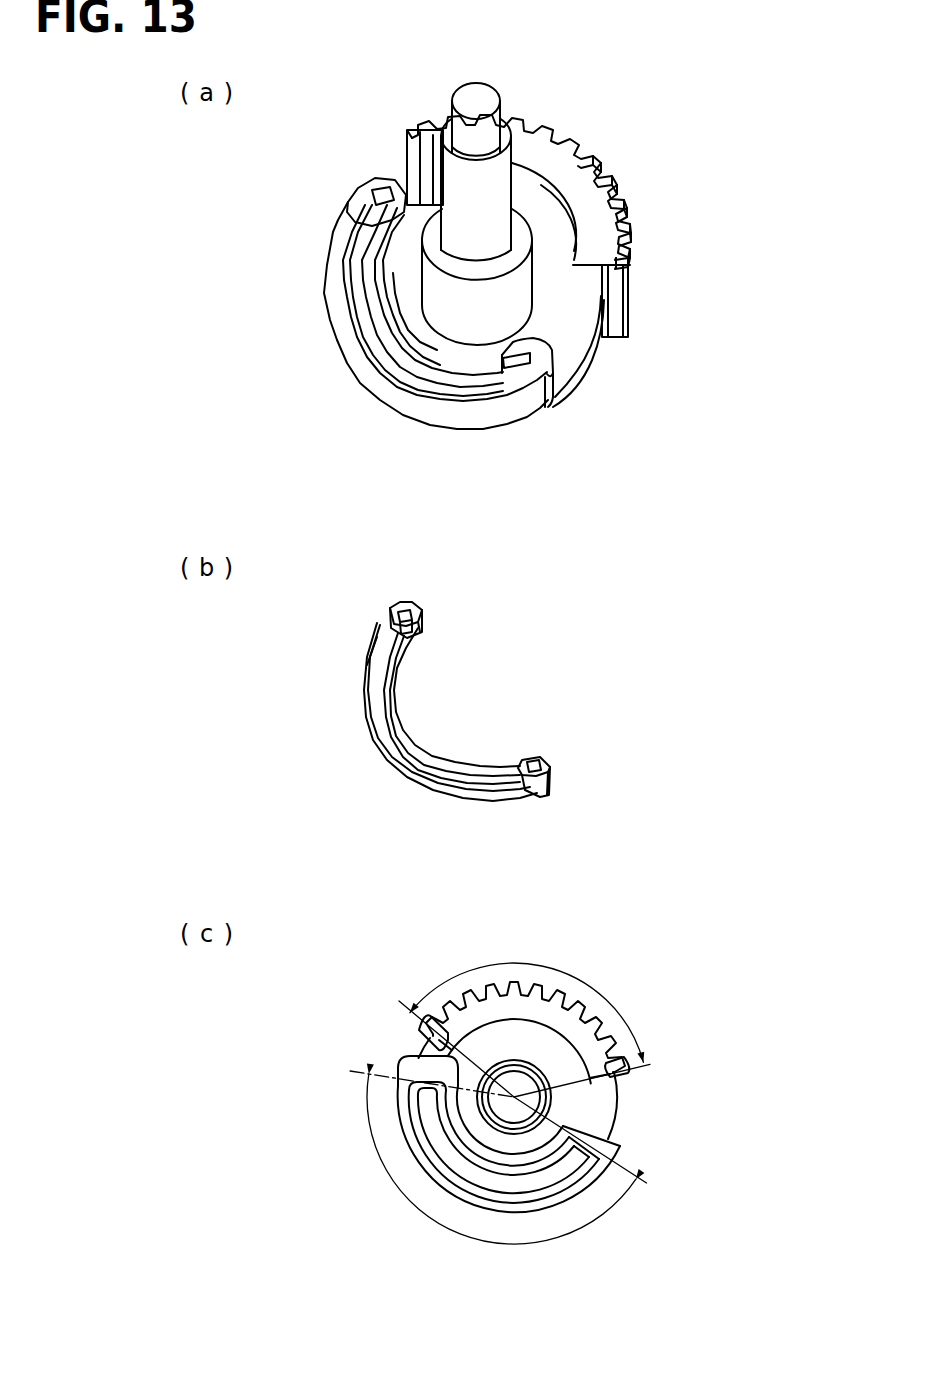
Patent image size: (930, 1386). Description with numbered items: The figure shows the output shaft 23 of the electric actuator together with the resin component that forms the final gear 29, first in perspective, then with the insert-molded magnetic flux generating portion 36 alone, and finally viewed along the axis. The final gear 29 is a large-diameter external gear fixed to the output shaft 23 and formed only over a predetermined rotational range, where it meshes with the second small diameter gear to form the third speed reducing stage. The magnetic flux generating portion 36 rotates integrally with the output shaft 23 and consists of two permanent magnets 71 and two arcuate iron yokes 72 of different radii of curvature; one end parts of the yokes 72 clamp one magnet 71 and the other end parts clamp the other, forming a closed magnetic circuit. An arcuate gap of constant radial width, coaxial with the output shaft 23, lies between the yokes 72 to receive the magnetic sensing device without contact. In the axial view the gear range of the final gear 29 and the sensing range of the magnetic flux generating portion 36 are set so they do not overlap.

The output shaft 23 is at (493, 170).
The final gear 29 is at (596, 150).
The magnetic flux generating portion 36 is at (318, 236).
The permanent magnets 71 is at (408, 604).
The yokes 72 is at (417, 738).